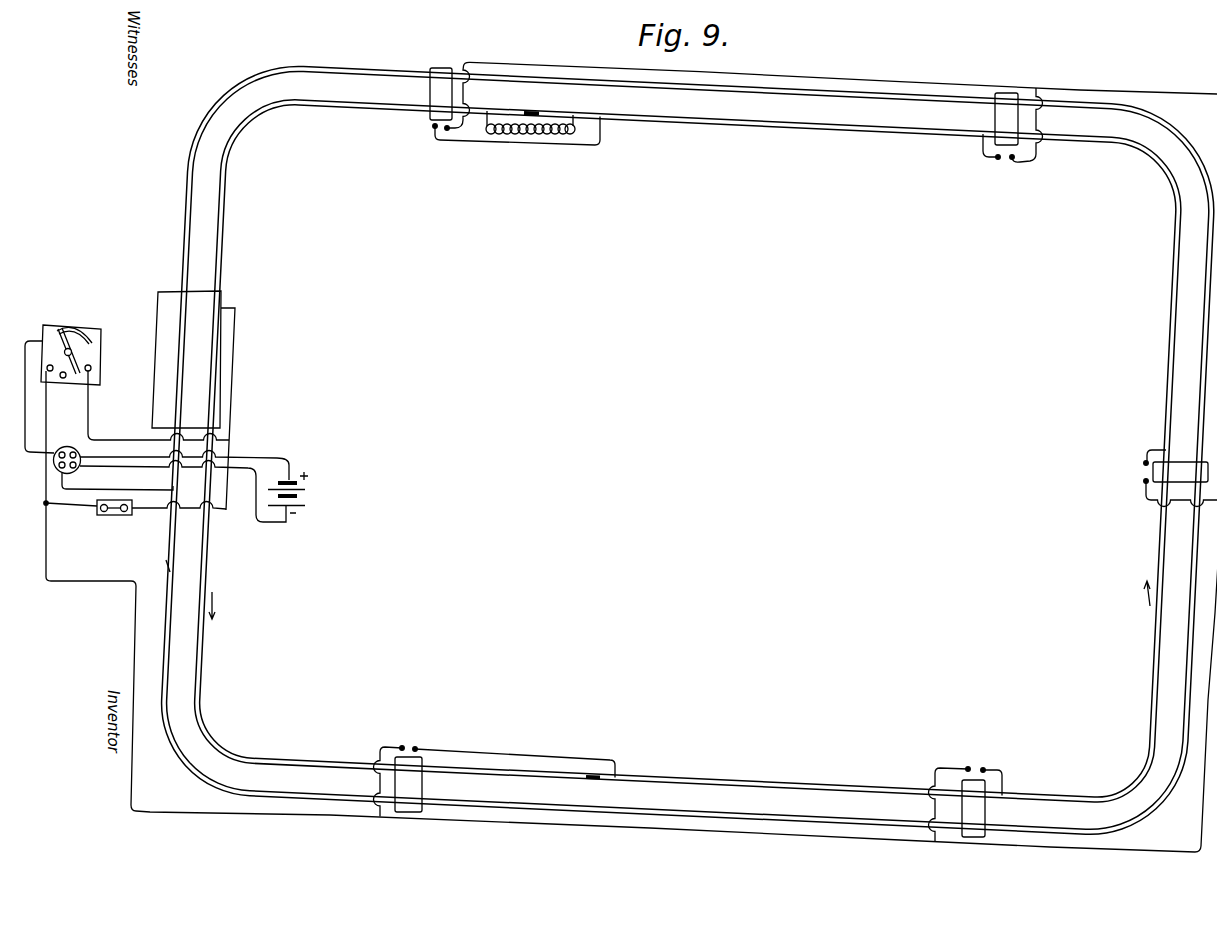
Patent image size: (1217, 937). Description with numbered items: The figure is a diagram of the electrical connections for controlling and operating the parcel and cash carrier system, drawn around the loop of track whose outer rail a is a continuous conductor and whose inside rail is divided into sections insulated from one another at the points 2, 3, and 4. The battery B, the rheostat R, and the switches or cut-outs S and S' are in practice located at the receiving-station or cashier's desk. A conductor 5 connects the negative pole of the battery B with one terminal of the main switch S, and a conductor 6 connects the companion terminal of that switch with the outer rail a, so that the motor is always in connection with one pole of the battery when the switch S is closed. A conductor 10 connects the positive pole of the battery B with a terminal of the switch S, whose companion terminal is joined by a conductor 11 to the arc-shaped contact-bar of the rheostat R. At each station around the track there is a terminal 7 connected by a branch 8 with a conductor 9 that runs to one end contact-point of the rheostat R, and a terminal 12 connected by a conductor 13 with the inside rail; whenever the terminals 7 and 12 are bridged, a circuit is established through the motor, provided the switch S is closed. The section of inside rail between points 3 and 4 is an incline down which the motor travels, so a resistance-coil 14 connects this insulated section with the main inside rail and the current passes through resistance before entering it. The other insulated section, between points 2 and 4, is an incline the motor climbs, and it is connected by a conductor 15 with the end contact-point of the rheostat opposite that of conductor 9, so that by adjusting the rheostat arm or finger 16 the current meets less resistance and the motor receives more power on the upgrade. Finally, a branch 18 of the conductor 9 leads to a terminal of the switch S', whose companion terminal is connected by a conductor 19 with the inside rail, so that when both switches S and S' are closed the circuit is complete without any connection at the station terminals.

The insulation point 2 is at (593, 769).
The insulation point 3 is at (532, 110).
The insulation point 4 is at (216, 334).
The electrical conductor 5 is at (264, 523).
The conductor 6 is at (125, 488).
The terminal 7 is at (1143, 482).
The branch 8 is at (1183, 506).
The conductor 9 is at (47, 403).
The conductor 10 is at (273, 458).
The conductor 11 is at (24, 403).
The terminal 12 is at (432, 127).
The conductor 13 is at (536, 149).
The resistance-coil 14 is at (539, 123).
The conductor 15 is at (158, 407).
The rheostat arm or finger 16 is at (78, 362).
The branch 18 is at (75, 505).
The conductor 19 is at (152, 510).
The outer rail a is at (167, 566).
The battery B is at (297, 492).
The rheostat R is at (71, 344).
The main switch S is at (67, 451).
The switch S' is at (114, 516).